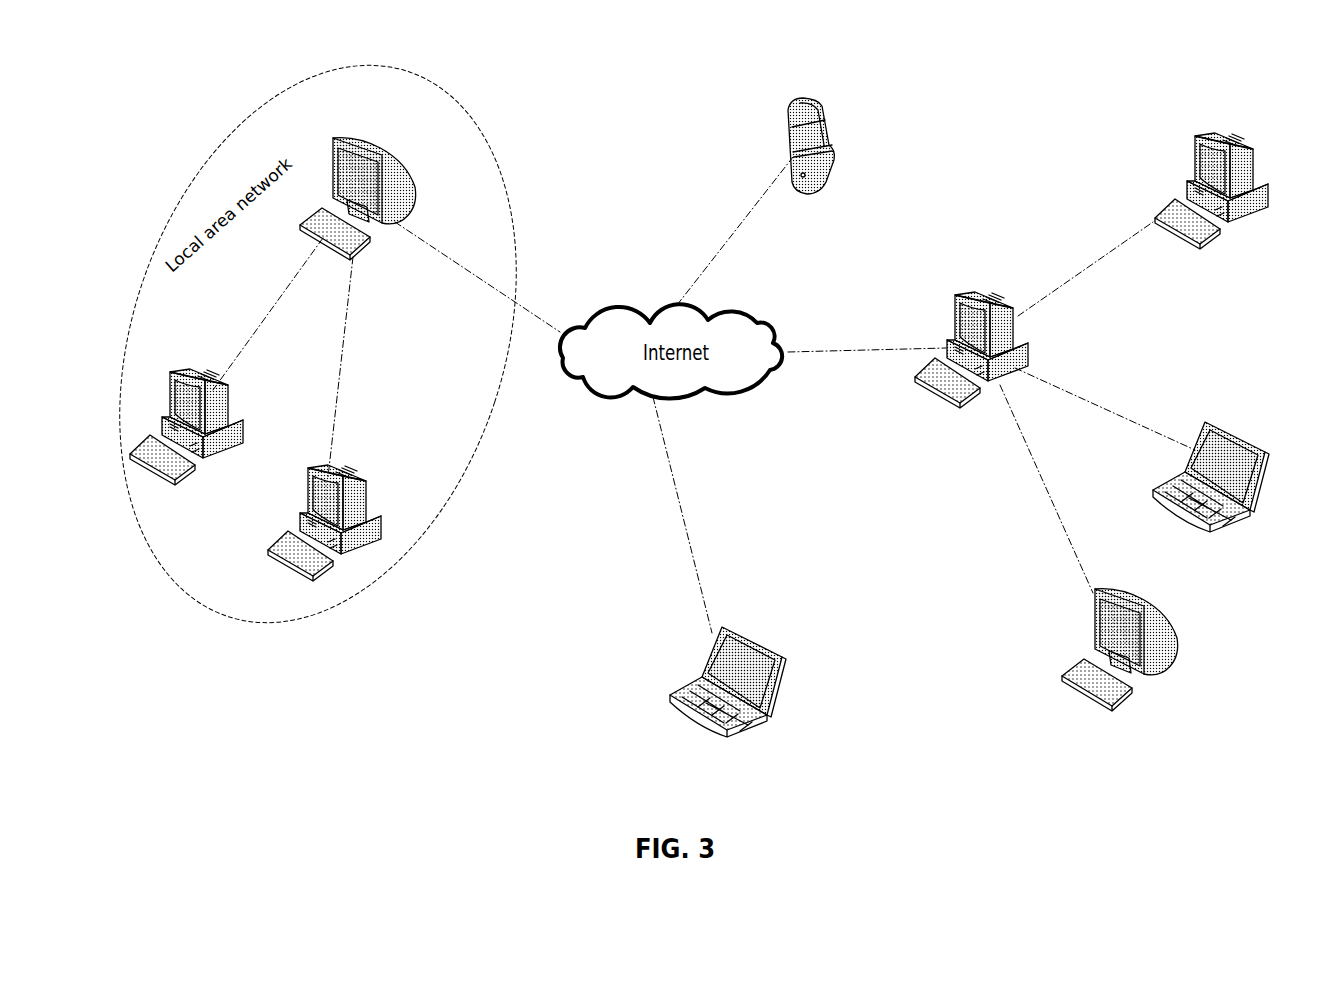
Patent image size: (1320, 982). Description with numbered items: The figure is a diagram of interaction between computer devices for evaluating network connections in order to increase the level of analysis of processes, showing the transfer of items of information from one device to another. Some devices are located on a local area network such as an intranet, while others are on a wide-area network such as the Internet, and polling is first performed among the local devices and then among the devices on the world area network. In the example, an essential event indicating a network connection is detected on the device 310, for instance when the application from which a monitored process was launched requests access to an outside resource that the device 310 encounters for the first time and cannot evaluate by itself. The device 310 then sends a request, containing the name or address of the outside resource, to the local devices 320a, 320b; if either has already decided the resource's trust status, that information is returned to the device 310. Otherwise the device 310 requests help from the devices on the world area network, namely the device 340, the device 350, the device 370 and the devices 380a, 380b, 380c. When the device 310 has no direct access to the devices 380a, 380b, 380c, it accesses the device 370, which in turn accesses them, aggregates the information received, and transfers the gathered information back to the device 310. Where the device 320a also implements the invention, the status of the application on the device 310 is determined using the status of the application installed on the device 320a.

The device 310 is at (386, 162).
The device 320a is at (202, 372).
The device 320b is at (368, 485).
The device 340 is at (780, 685).
The device 350 is at (823, 100).
The device 370 is at (990, 290).
The device 380a is at (1104, 588).
The device 380b is at (1207, 420).
The device 380c is at (1193, 145).